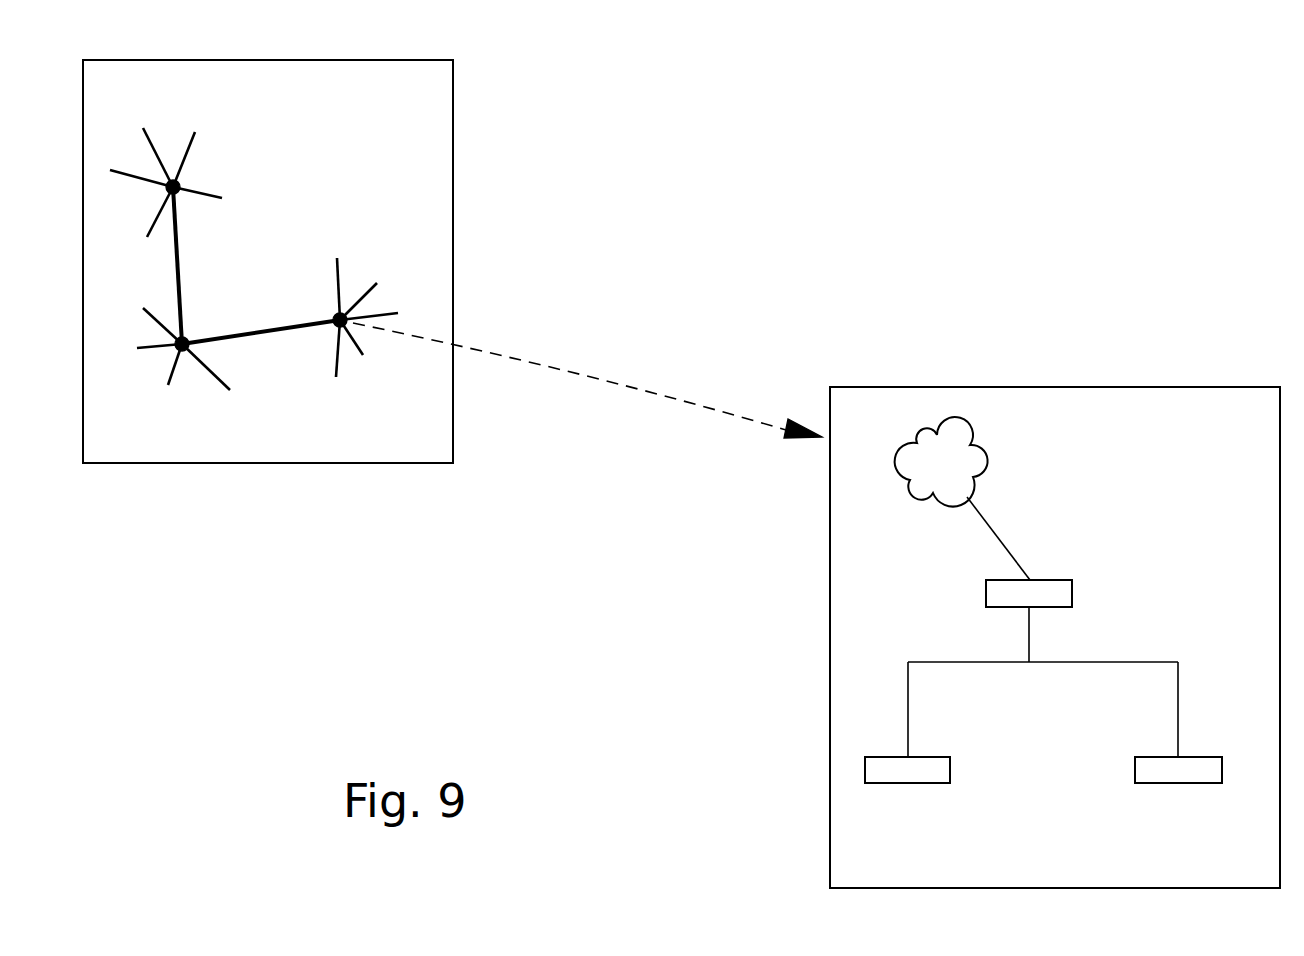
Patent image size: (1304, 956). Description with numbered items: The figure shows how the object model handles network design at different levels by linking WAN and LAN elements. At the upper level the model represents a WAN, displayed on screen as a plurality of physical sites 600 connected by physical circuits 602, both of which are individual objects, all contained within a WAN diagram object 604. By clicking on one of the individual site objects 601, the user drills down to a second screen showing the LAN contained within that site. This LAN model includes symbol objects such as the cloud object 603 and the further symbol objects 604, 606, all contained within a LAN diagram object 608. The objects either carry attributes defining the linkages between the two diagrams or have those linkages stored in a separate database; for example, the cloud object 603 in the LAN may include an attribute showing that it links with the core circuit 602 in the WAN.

The physical site 600 is at (180, 180).
The individual site object 601 is at (335, 316).
The physical circuit 602 is at (277, 332).
The cloud object 603 is at (988, 470).
The WAN diagram object 604 is at (273, 60).
The symbol object 606 is at (1170, 783).
The LAN diagram object 608 is at (1023, 387).